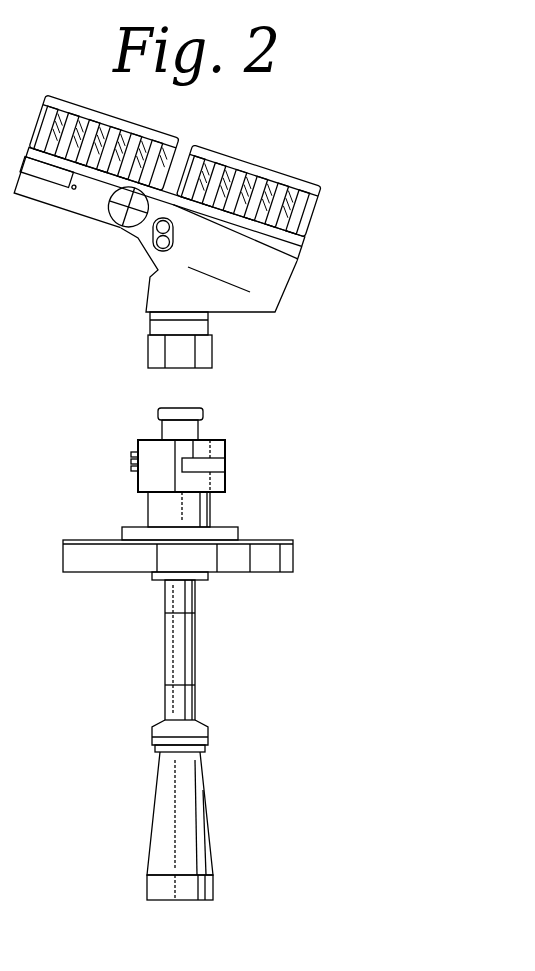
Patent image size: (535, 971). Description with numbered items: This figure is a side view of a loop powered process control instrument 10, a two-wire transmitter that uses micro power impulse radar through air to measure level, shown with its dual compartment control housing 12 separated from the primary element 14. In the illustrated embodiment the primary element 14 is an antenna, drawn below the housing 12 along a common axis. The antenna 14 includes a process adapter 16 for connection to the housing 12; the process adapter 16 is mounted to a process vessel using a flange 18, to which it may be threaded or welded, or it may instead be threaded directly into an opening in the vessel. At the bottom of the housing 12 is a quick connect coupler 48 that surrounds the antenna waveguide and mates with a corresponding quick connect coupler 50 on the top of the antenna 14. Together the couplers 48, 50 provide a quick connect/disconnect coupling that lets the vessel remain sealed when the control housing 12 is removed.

The process control instrument 10 is at (331, 161).
The control housing 12 is at (303, 283).
The primary element 14 is at (200, 699).
The process adapter 16 is at (223, 506).
The flange 18 is at (296, 560).
The quick connect coupler 48 is at (213, 348).
The quick connect coupler 50 is at (204, 413).